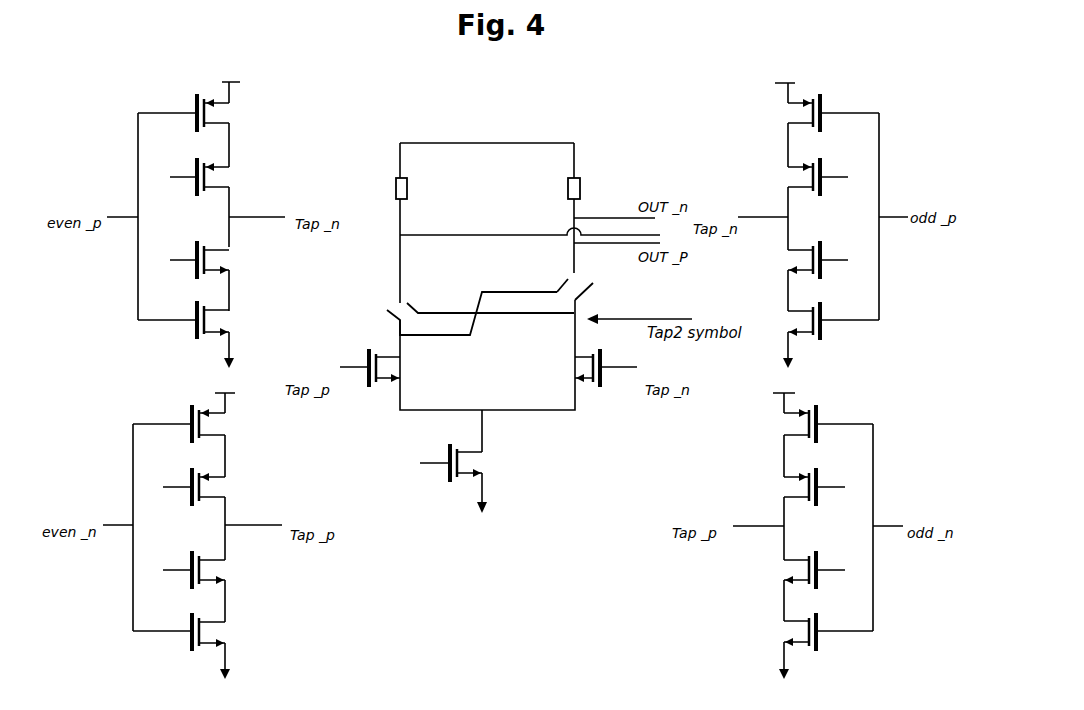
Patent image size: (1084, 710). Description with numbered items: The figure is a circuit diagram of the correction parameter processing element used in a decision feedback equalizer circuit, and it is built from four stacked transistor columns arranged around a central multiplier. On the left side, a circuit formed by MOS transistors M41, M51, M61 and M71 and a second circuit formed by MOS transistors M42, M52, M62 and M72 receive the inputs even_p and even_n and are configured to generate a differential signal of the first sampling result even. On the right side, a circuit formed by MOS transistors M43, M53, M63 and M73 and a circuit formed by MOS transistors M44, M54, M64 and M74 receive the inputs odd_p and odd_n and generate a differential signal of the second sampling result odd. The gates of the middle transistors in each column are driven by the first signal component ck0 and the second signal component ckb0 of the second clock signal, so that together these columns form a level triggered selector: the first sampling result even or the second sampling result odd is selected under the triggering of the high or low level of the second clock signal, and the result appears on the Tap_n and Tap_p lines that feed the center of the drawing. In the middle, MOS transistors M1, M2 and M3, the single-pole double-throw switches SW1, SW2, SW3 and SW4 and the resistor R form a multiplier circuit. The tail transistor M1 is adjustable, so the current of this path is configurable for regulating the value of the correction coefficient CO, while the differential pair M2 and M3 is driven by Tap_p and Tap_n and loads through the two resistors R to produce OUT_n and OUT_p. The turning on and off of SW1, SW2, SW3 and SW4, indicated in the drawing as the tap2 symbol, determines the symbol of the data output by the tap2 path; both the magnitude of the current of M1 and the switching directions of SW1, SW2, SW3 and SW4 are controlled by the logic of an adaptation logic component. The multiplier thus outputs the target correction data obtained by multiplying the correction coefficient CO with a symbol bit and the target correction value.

The MOS transistor M1 is at (476, 478).
The MOS transistor M2 is at (388, 368).
The MOS transistor M3 is at (591, 368).
The resistor R is at (488, 190).
The single-pole double-throw switch SW1 is at (603, 295).
The single-pole double-throw switch SW2 is at (537, 281).
The single-pole double-throw switch SW3 is at (449, 313).
The single-pole double-throw switch SW4 is at (490, 301).
The MOS transistor M41 is at (203, 114).
The MOS transistor M51 is at (208, 179).
The MOS transistor M61 is at (204, 263).
The MOS transistor M71 is at (203, 320).
The MOS transistor M42 is at (198, 425).
The MOS transistor M52 is at (205, 489).
The MOS transistor M62 is at (201, 573).
The MOS transistor M72 is at (199, 632).
The MOS transistor M43 is at (814, 114).
The MOS transistor M53 is at (809, 178).
The MOS transistor M63 is at (803, 262).
The MOS transistor M73 is at (817, 321).
The MOS transistor M44 is at (809, 424).
The MOS transistor M54 is at (804, 489).
The MOS transistor M64 is at (798, 573).
The MOS transistor M74 is at (813, 632).